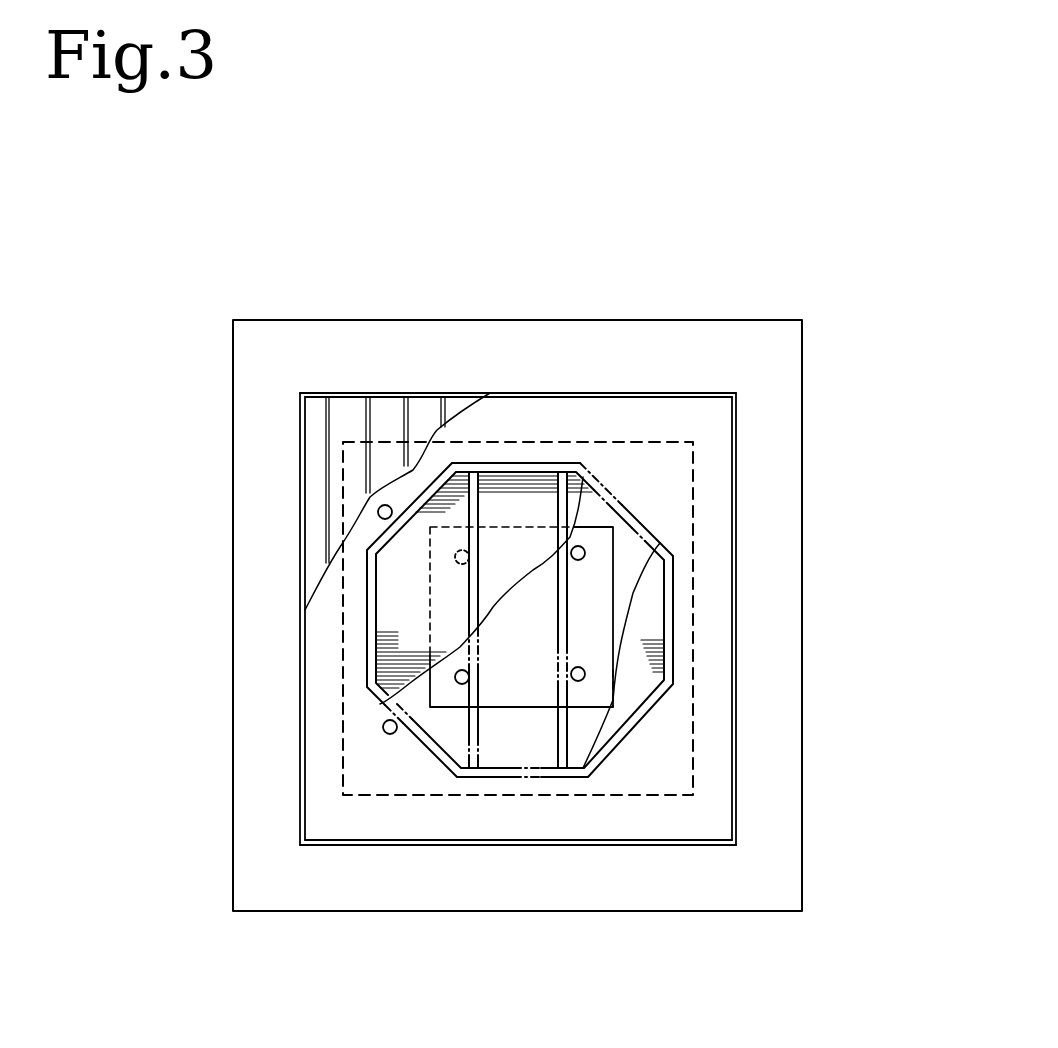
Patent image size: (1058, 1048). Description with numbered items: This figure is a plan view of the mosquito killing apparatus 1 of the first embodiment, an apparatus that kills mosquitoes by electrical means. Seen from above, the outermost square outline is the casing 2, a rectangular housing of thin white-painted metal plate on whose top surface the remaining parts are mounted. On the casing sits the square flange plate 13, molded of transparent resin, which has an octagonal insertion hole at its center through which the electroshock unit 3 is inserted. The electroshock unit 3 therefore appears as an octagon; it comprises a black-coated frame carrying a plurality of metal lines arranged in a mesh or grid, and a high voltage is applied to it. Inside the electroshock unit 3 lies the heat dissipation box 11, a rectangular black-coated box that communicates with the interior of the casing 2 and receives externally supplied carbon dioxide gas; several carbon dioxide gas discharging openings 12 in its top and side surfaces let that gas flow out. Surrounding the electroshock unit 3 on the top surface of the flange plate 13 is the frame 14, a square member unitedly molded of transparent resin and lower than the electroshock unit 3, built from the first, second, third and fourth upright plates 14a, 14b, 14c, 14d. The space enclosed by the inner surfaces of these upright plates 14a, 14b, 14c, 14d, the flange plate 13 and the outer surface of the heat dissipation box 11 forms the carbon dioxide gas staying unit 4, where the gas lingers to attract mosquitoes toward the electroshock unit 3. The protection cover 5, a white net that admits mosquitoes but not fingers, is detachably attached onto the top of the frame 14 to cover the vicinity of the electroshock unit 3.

The mosquito killing apparatus 1 is at (272, 296).
The casing 2 is at (651, 778).
The electroshock unit 3 is at (502, 487).
The carbon dioxide gas staying unit 4 is at (710, 817).
The protection cover 5 is at (323, 428).
The heat dissipation box 11 is at (593, 613).
The carbon dioxide gas discharging openings 12 is at (585, 545).
The flange plate 13 is at (658, 337).
The frame 14 is at (745, 611).
The first upright plate 14a is at (548, 845).
The second upright plate 14b is at (300, 513).
The third upright plate 14c is at (390, 398).
The fourth upright plate 14d is at (737, 417).